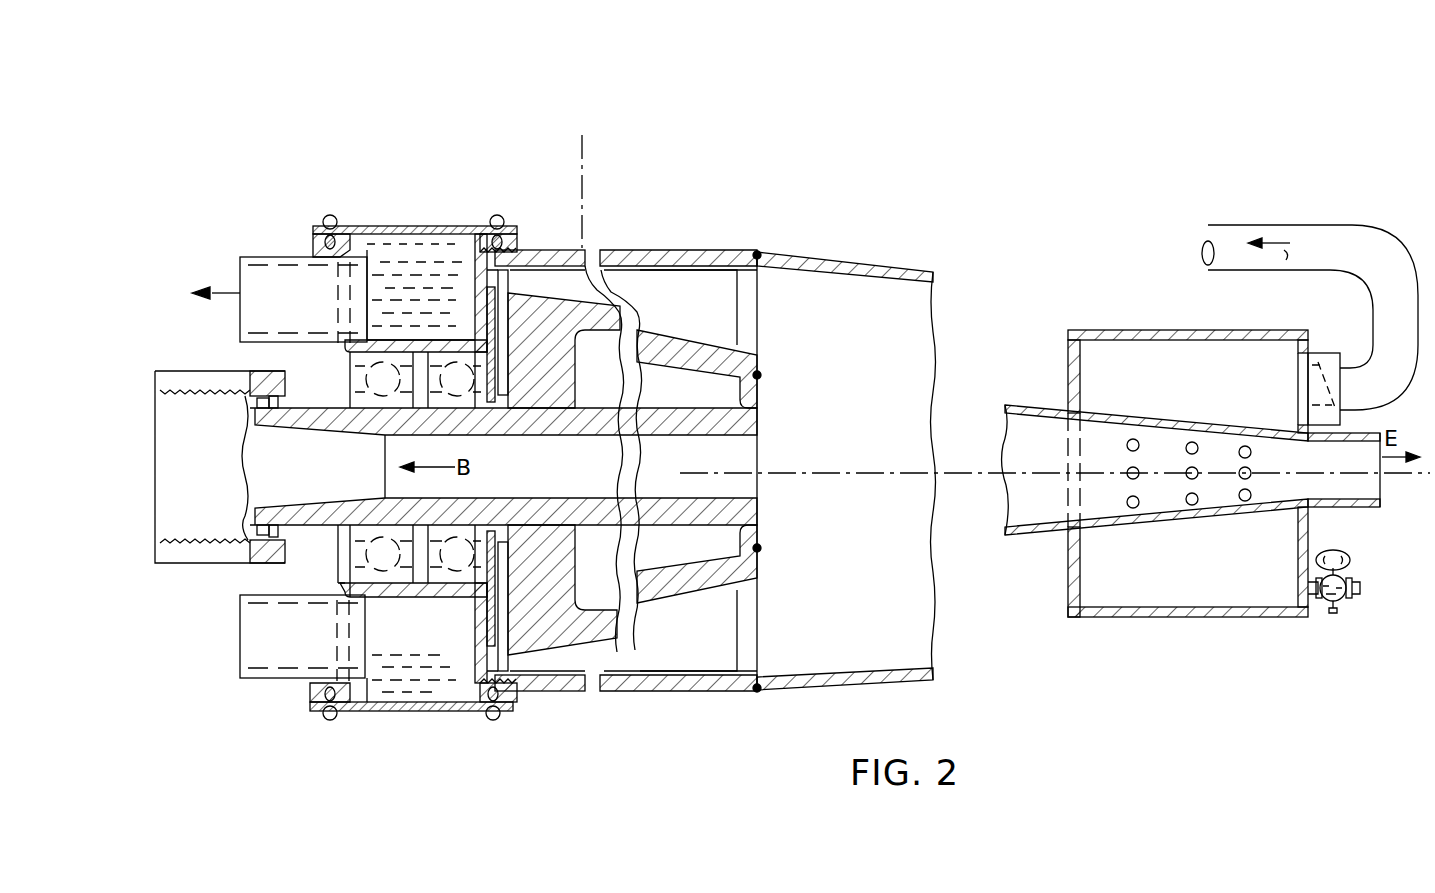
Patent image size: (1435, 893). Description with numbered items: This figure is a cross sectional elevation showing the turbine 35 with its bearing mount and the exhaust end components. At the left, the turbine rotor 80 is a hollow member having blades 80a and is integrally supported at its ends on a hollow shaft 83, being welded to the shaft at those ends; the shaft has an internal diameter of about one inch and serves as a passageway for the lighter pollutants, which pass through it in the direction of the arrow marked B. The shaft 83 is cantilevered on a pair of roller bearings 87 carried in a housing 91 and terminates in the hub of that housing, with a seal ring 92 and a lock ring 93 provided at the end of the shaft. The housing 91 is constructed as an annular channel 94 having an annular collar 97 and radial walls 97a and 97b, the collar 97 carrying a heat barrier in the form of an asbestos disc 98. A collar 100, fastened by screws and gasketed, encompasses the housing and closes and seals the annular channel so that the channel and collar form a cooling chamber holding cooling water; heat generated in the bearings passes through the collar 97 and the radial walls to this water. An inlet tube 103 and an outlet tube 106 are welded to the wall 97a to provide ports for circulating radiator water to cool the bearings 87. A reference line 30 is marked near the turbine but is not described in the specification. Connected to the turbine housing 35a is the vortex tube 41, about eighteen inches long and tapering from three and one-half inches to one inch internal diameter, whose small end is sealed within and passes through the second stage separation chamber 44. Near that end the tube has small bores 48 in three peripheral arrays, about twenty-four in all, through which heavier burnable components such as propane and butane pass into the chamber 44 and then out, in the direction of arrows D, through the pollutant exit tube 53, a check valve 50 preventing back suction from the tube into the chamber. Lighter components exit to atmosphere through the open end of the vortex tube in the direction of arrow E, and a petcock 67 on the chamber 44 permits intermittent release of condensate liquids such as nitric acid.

The section line 30 is at (630, 168).
The turbine 35 is at (670, 228).
The turbine housing 35a is at (772, 208).
The vortex tube 41 is at (858, 263).
The second stage separation chamber 44 is at (1062, 368).
The small bores 48 is at (1128, 450).
The check valve 50 is at (1332, 358).
The pollutant exit tube 53 is at (1352, 226).
The petcock 67 is at (1348, 594).
The turbine rotor 80 is at (612, 384).
The blades 80a is at (718, 307).
The hollow shaft 83 is at (710, 396).
The roller bearings 87 is at (362, 379).
The housing 91 is at (311, 688).
The seal ring 92 is at (276, 527).
The lock ring 93 is at (272, 518).
The annular channel 94 is at (447, 660).
The annular collar 97 is at (428, 597).
The radial wall 97a is at (341, 554).
The radial wall 97b is at (469, 640).
The asbestos disc 98 is at (538, 508).
The collar 100 is at (506, 702).
The inlet tube 103 is at (310, 658).
The outlet tube 106 is at (324, 311).